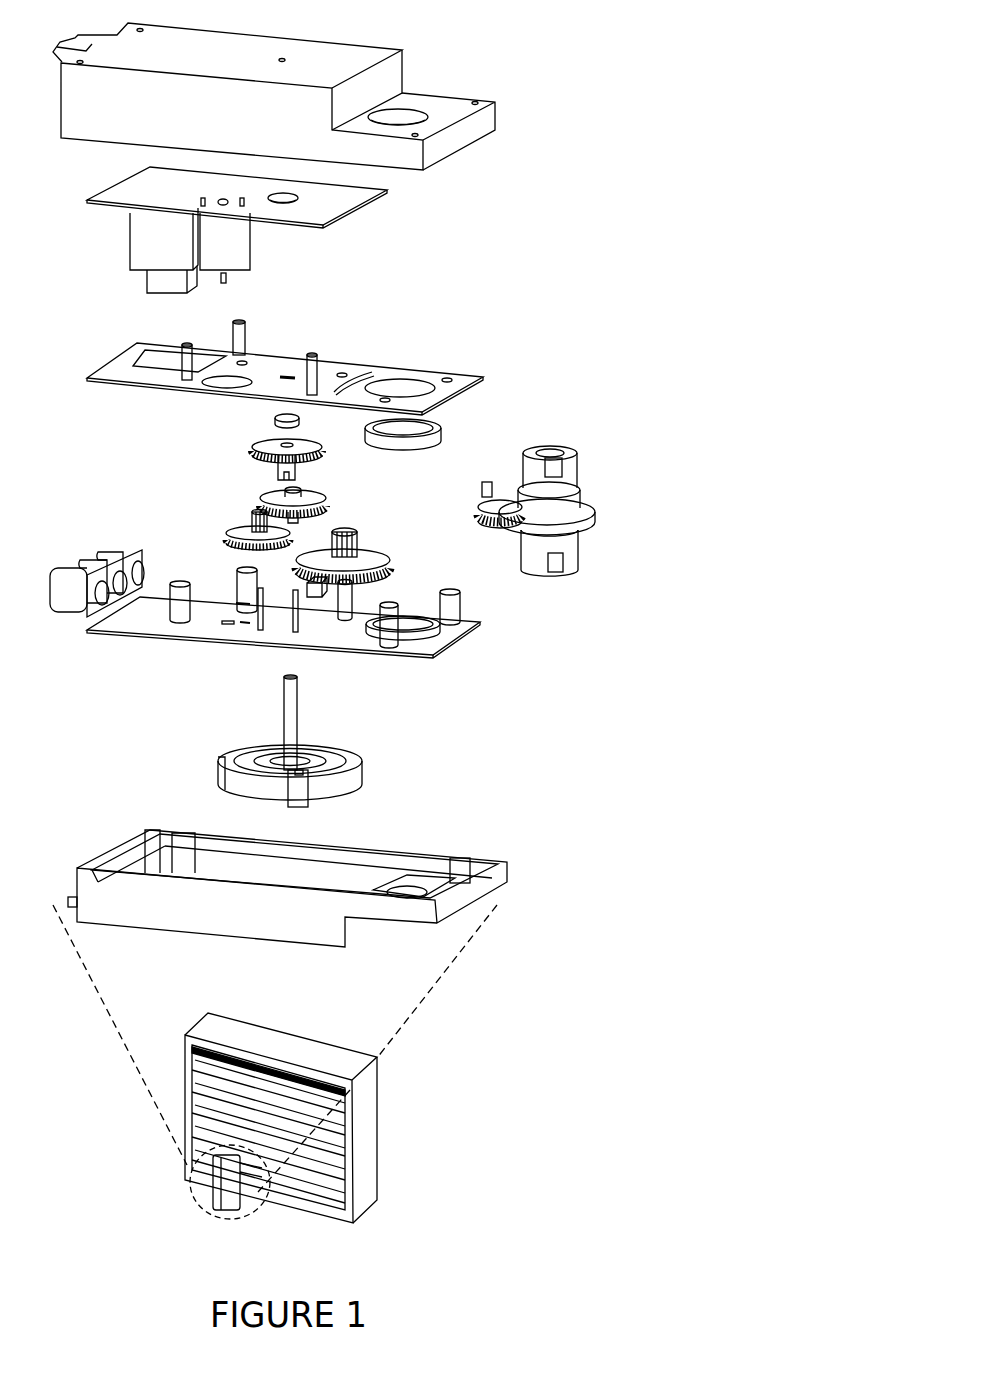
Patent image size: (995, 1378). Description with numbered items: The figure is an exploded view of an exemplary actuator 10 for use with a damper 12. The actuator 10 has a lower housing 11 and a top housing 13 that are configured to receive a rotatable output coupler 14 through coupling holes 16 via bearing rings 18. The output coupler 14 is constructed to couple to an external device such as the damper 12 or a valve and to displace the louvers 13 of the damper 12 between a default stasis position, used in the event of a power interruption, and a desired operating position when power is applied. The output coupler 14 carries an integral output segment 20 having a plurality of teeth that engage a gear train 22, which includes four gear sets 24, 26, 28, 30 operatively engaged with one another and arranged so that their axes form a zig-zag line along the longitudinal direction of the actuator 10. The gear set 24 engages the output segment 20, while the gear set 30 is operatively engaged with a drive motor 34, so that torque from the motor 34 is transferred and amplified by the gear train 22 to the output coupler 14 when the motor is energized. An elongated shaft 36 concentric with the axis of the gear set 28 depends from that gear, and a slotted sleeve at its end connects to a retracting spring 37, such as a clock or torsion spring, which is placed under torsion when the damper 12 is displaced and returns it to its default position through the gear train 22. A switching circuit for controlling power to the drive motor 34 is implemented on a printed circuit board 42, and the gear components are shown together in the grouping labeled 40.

The actuator 10 is at (600, 50).
The lower housing 11 is at (198, 910).
The damper 12 is at (420, 1108).
The top housing 13 is at (82, 123).
The output coupler 14 is at (580, 519).
The coupling holes 16 is at (404, 113).
The bearing rings 18 is at (437, 432).
The output segment 20 is at (483, 500).
The gear train 22 is at (430, 549).
The gear set 24 is at (370, 557).
The gear set 26 is at (240, 529).
The gear set 28 is at (280, 494).
The gear set 30 is at (318, 444).
The drive motor 34 is at (230, 248).
The elongated shaft 36 is at (292, 702).
The retracting spring 37 is at (362, 777).
The gear train assembly 40 is at (530, 376).
The printed circuit board 42 is at (380, 330).